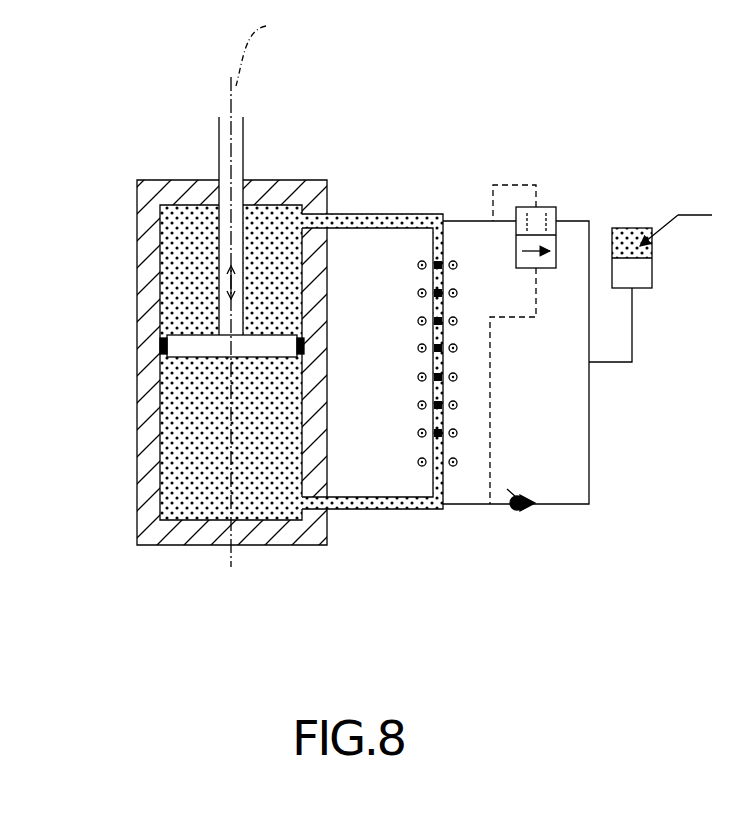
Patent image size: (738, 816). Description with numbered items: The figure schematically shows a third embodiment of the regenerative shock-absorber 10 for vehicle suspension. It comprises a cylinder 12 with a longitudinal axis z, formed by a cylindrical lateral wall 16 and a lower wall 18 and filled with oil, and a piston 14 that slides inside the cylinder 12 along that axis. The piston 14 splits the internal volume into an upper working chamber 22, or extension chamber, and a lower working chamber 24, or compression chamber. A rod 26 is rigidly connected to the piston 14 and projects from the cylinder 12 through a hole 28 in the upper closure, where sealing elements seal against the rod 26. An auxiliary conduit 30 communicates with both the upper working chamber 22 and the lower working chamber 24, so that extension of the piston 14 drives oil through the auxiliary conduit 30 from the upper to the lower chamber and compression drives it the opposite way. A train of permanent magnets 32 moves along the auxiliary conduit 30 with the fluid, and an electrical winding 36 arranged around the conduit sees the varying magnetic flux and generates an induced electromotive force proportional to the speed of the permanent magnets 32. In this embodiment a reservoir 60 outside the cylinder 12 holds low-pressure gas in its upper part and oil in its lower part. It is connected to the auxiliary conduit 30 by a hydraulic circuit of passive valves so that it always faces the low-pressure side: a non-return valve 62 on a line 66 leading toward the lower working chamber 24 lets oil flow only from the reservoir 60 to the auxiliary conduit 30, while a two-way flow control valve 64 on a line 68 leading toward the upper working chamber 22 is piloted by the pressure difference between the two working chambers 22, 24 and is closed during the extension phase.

The regenerative shock-absorber 10 is at (184, 321).
The cylinder 12 is at (133, 454).
The piston 14 is at (183, 333).
The cylindrical lateral wall 16 is at (137, 400).
The lower wall 18 is at (275, 547).
The upper working chamber 22 is at (182, 252).
The lower working chamber 24 is at (200, 493).
The rod 26 is at (218, 127).
The hole 28 is at (220, 170).
The auxiliary conduit 30 is at (360, 214).
The permanent magnets 32 is at (447, 310).
The electrical winding 36 is at (453, 466).
The reservoir 60 is at (632, 228).
The non-return valve 62 is at (517, 511).
The two-way flow control valve 64 is at (552, 207).
The line 66 is at (589, 487).
The line 68 is at (448, 214).